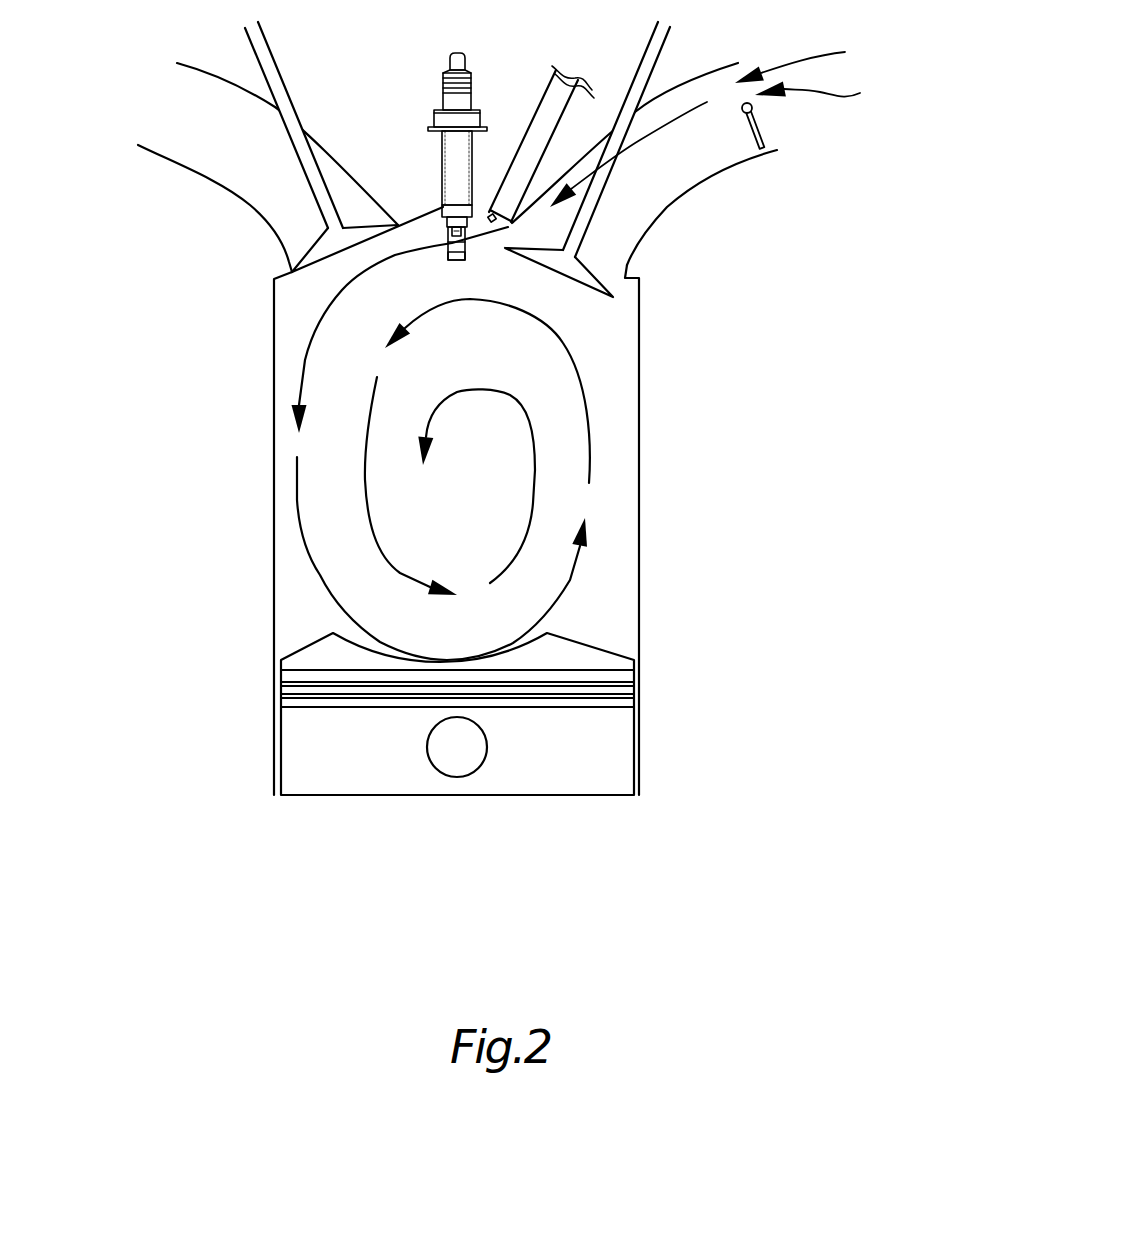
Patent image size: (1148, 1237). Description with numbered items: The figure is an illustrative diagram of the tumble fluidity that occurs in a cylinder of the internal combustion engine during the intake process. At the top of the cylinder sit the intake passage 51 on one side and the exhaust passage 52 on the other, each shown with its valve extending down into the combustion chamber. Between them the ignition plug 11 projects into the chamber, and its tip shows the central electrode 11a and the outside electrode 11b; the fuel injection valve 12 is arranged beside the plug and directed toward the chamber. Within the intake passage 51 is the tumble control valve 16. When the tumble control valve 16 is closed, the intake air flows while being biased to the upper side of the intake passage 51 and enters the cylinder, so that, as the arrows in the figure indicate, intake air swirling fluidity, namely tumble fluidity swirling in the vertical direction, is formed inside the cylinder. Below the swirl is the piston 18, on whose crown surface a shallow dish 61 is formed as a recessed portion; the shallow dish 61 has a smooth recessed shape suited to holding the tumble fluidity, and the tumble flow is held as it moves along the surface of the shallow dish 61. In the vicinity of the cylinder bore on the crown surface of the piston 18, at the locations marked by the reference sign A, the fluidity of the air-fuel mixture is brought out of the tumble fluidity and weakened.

The ignition plug 11 is at (368, 176).
The central electrode 11a is at (443, 231).
The outside electrode 11b is at (448, 253).
The fuel injection valve 12 is at (563, 107).
The tumble control valve 16 is at (742, 112).
The piston 18 is at (625, 755).
The intake passage 51 is at (702, 88).
The exhaust passage 52 is at (227, 100).
The shallow dish 61 is at (433, 624).
The point near cylinder bore A is at (282, 628).